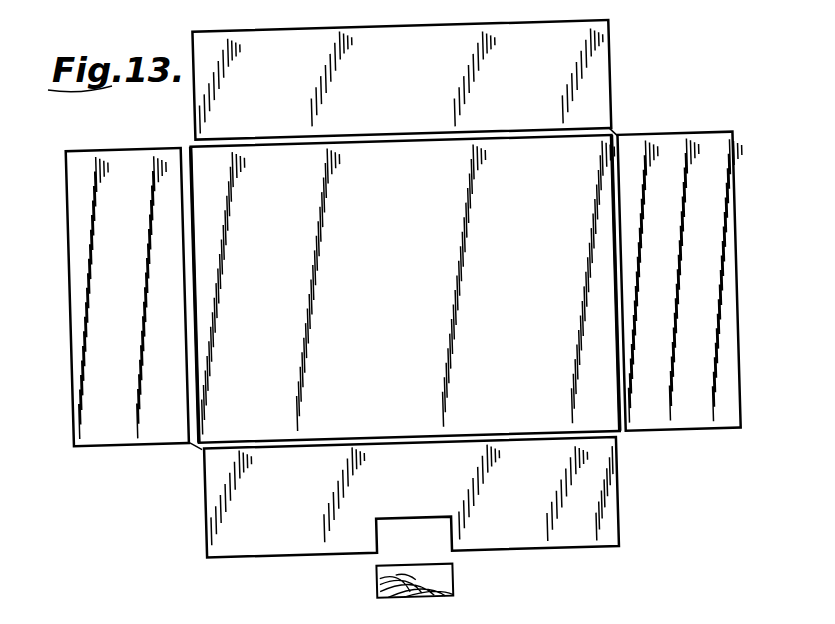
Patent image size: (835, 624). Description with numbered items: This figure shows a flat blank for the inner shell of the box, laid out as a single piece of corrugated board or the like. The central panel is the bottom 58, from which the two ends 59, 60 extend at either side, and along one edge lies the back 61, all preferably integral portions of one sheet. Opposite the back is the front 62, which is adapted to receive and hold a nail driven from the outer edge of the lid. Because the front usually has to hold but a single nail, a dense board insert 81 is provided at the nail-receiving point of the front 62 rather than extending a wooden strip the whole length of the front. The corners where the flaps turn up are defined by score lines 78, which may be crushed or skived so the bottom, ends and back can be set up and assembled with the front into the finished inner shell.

The bottom 58 is at (564, 397).
The end 59 is at (82, 271).
The end 60 is at (727, 321).
The back 61 is at (595, 33).
The front 62 is at (261, 536).
The corner slits between panels 78 is at (204, 445).
The insert 81 is at (442, 583).